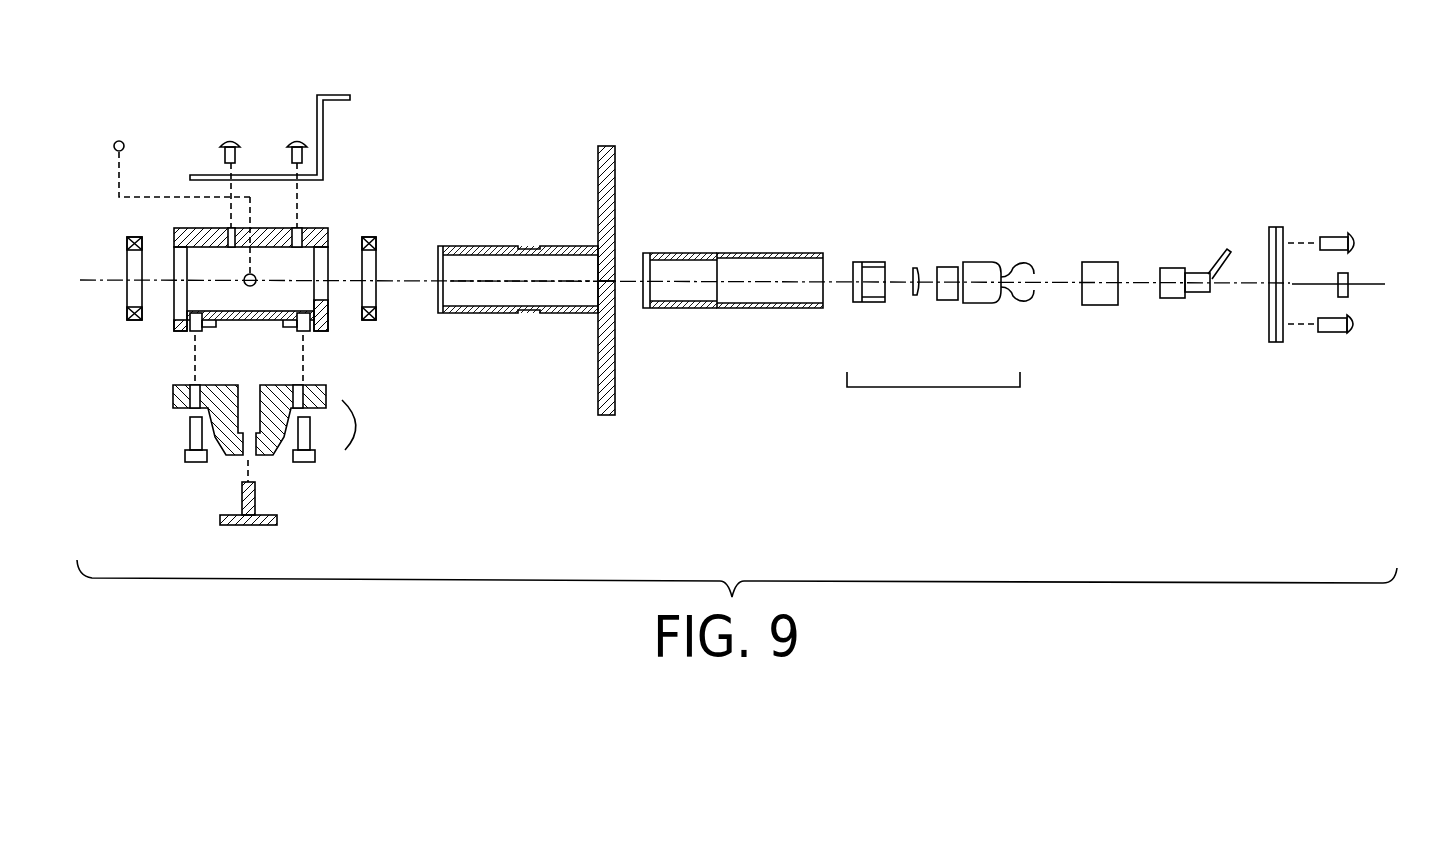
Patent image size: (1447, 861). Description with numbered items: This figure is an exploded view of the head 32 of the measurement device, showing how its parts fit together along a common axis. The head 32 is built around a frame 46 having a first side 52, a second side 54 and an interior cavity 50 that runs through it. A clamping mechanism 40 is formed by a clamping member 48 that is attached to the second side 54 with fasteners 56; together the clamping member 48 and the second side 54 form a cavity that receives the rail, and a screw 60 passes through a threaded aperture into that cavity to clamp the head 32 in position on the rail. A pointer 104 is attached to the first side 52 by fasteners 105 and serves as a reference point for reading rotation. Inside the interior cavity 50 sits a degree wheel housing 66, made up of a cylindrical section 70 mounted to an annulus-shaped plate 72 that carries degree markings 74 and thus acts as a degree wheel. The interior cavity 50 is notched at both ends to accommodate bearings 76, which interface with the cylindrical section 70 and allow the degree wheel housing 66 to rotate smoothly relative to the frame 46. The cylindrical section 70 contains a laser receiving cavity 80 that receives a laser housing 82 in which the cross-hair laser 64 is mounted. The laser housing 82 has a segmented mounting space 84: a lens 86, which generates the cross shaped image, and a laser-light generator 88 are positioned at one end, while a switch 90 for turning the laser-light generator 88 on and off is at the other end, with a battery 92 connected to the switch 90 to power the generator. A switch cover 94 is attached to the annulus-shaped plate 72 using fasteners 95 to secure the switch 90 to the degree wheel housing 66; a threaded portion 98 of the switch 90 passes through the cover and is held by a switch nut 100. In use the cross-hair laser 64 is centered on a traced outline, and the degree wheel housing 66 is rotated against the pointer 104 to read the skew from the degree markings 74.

The head 32 is at (208, 90).
The fasteners 105 is at (300, 138).
The pointer 104 is at (323, 147).
The first side 52 is at (203, 227).
The frame 46 is at (307, 233).
The second side 54 is at (318, 333).
The interior cavity 50 is at (297, 297).
The bearings 76 is at (128, 247).
The clamping member 48 is at (173, 390).
The fasteners 56 is at (185, 438).
The clamping mechanism 40 is at (358, 424).
The screw 60 is at (270, 523).
The cylindrical section 70 is at (510, 313).
The degree wheel housing 66 is at (562, 322).
The laser receiving cavity 80 is at (568, 270).
The degree markings 74 is at (622, 167).
The annulus-shaped plate 72 is at (613, 400).
The laser housing 82 is at (723, 252).
The mounting space 84 is at (778, 270).
The lens 86 is at (865, 303).
The laser-light generator 88 is at (977, 268).
The battery 92 is at (1097, 262).
The switch 90 is at (1170, 267).
The threaded portion 98 is at (1197, 298).
The cross-hair laser 64 is at (915, 388).
The switch cover 94 is at (1283, 228).
The fasteners 95 is at (1332, 237).
The switch nut 100 is at (1348, 275).